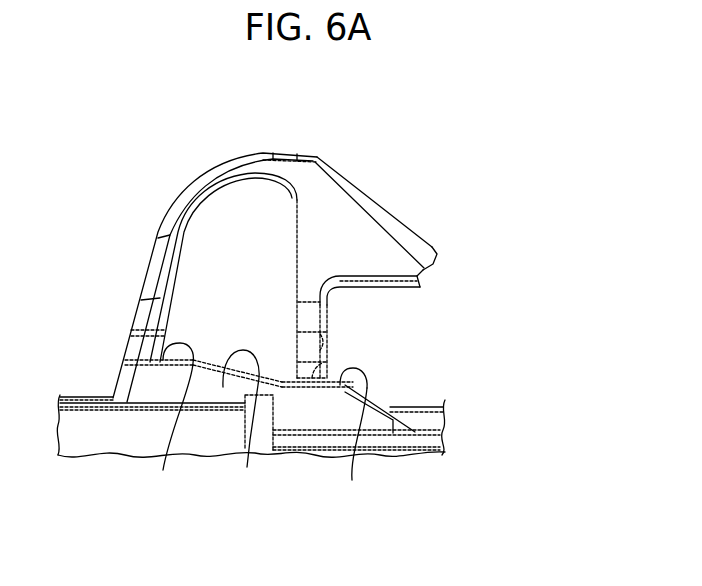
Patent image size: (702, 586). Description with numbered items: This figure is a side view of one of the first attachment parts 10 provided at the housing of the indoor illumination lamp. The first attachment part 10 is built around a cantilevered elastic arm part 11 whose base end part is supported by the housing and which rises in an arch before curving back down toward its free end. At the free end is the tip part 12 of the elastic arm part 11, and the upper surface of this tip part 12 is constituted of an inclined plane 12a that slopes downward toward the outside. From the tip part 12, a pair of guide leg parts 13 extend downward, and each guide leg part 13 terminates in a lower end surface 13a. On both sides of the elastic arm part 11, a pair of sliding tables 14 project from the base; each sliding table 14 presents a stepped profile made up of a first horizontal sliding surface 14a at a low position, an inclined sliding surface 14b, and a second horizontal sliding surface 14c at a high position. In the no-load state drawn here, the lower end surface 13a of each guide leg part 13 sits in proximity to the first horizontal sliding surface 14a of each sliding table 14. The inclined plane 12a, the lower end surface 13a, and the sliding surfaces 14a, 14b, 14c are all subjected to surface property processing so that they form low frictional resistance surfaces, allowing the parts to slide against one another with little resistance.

The first attachment part 10 is at (358, 152).
The elastic arm part 11 is at (150, 273).
The tip part 12 is at (382, 257).
The inclined plane 12a is at (390, 200).
The guide leg part 13 is at (327, 353).
The lower end surface 13a is at (330, 380).
The sliding table 14 is at (223, 387).
The first horizontal sliding surface 14a is at (352, 480).
The inclined sliding surface 14b is at (247, 467).
The second horizontal sliding surface 14c is at (163, 470).